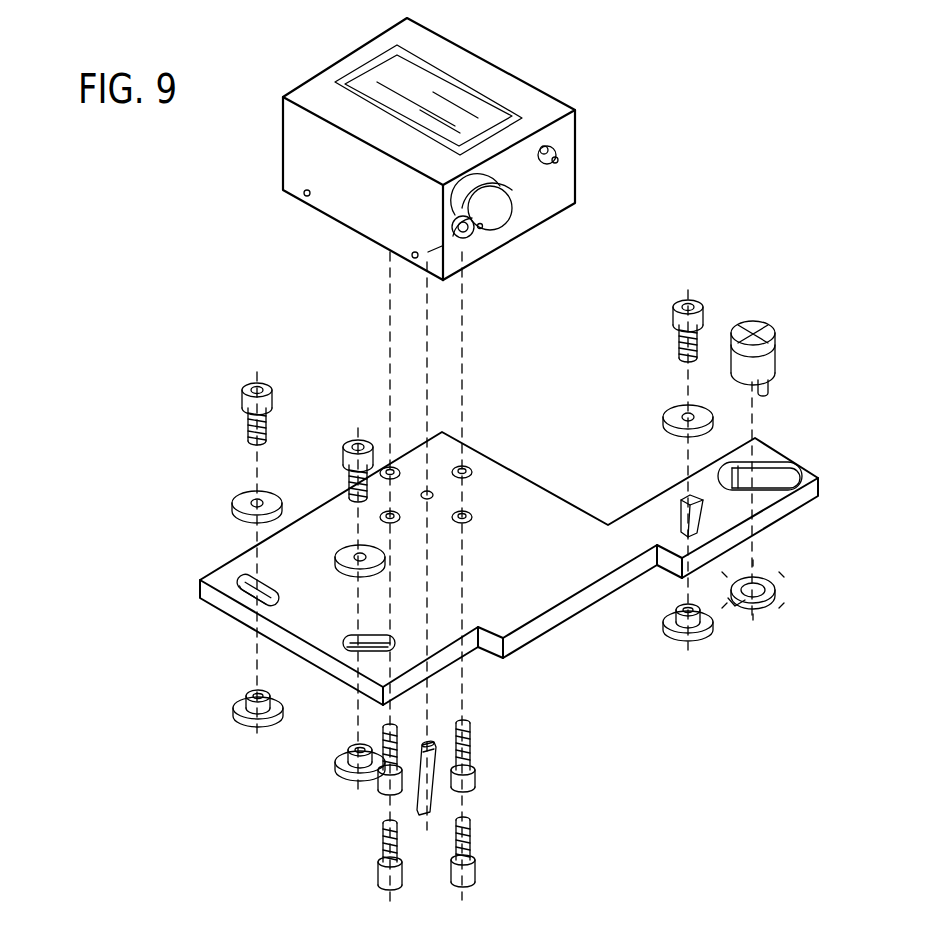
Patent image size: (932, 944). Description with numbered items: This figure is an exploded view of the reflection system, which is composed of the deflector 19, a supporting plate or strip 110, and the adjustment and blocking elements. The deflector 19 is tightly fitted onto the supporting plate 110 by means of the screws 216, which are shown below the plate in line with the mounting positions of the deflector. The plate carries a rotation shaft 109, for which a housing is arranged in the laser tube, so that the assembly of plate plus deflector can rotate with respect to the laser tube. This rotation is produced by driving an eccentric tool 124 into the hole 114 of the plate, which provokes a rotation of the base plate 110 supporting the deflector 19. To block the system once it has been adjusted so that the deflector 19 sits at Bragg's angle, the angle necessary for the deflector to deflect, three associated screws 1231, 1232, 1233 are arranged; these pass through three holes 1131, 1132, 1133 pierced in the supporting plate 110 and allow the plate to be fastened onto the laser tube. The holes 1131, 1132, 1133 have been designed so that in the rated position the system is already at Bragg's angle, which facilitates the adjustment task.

The deflector 19 is at (532, 110).
The supporting plate 110 is at (498, 578).
The hole 114 is at (775, 475).
The eccentric tool 124 is at (752, 320).
The rotation shaft 109 is at (433, 802).
The screws 216 is at (467, 882).
The hole 1131 is at (697, 528).
The hole 1132 is at (245, 597).
The hole 1133 is at (395, 645).
The screw 1231 is at (688, 305).
The screw 1232 is at (248, 385).
The screw 1233 is at (355, 460).